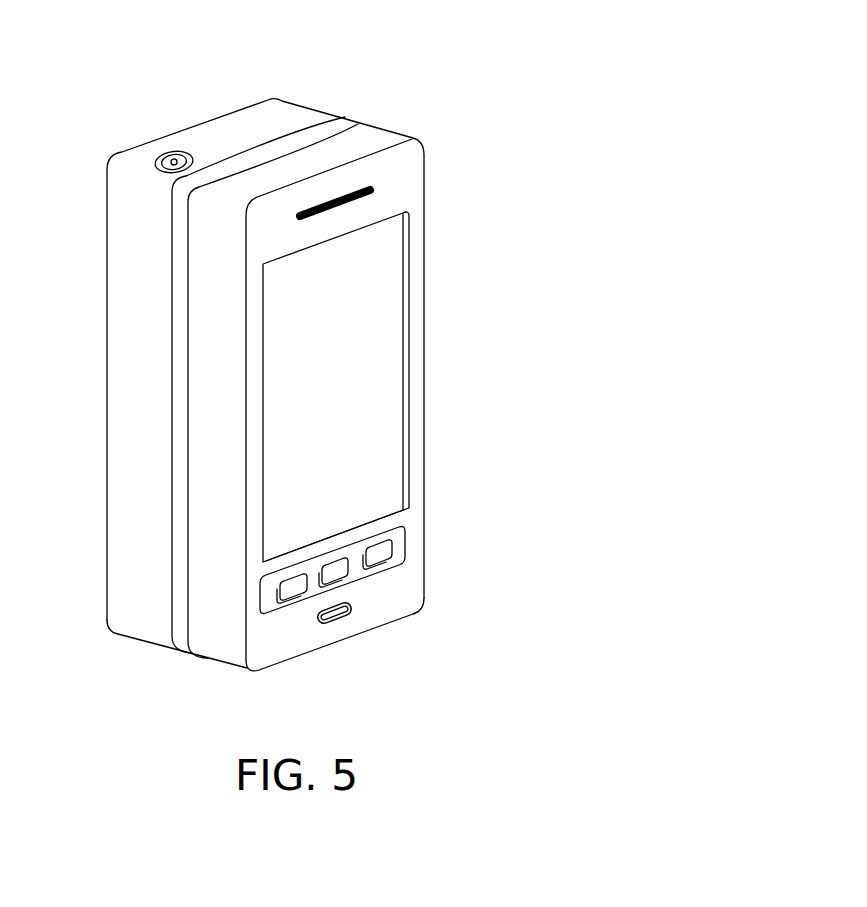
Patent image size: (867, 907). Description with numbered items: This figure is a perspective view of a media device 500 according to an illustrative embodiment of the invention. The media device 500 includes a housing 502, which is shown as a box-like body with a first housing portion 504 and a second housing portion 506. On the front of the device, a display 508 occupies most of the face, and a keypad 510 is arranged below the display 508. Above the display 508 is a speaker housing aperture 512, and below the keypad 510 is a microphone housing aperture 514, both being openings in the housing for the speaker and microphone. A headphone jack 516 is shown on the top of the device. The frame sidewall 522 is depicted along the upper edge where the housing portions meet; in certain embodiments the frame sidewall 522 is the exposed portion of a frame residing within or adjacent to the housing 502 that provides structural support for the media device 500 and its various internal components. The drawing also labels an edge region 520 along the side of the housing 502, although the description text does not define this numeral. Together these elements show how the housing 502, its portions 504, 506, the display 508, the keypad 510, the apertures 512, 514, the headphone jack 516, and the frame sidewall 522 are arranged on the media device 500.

The media device 500 is at (500, 80).
The housing 502 is at (107, 510).
The first housing portion 504 is at (140, 640).
The second housing portion 506 is at (223, 665).
The display 508 is at (397, 272).
The keypad 510 is at (398, 540).
The speaker housing aperture 512 is at (365, 184).
The microphone housing aperture 514 is at (350, 612).
The headphone jack 516 is at (174, 153).
The side edge 520 is at (172, 577).
The frame sidewall 522 is at (345, 118).